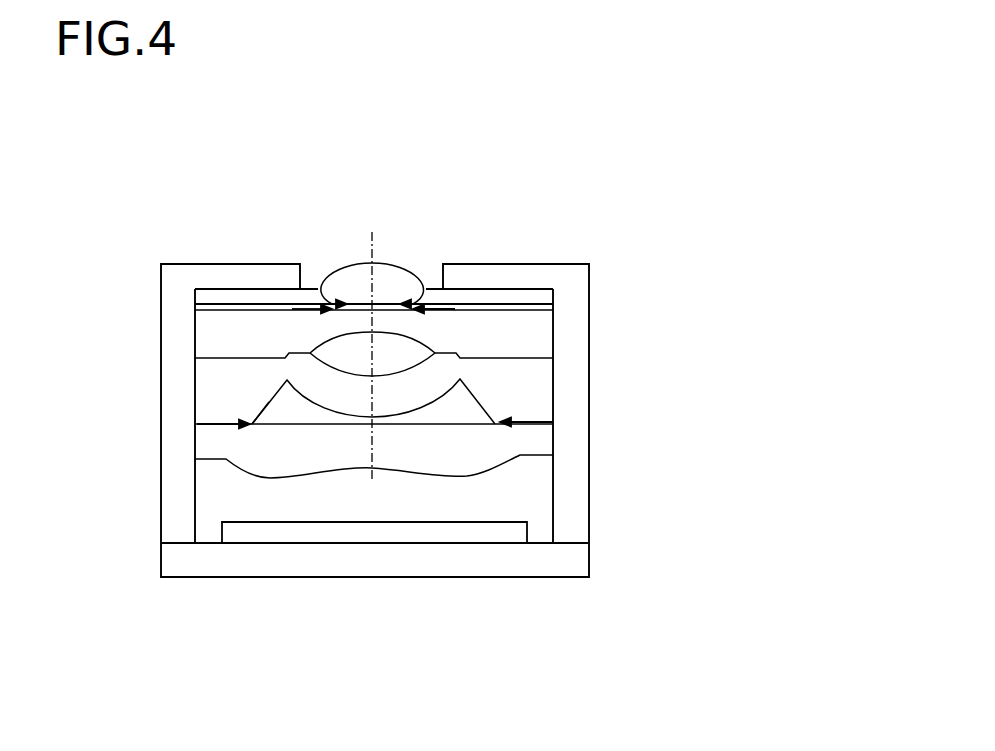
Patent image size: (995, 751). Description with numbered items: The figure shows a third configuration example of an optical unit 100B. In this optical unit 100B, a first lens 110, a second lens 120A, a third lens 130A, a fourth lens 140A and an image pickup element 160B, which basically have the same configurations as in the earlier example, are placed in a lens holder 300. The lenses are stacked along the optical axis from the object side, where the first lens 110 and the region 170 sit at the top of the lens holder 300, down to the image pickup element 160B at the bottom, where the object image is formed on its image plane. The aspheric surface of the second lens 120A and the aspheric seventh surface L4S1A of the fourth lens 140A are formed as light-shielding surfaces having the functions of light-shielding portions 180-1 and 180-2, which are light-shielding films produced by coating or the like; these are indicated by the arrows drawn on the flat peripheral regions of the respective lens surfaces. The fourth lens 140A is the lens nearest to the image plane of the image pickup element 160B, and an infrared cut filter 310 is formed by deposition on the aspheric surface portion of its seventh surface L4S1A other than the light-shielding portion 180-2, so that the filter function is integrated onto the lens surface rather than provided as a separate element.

The optical unit 100B is at (399, 141).
The lens holder 300 is at (576, 272).
The first lens 110 is at (547, 296).
The second lens 120A is at (547, 337).
The third lens 130A is at (547, 372).
The fourth lens 140A is at (545, 445).
The image pickup element 160B is at (399, 533).
The object side region (OBJS) 170 is at (331, 303).
The light-shielding portion 180-1 is at (302, 306).
The light-shielding portion 180-2 is at (221, 424).
The infrared cut filter 310 is at (452, 424).
The seventh surface L4S1A is at (252, 424).